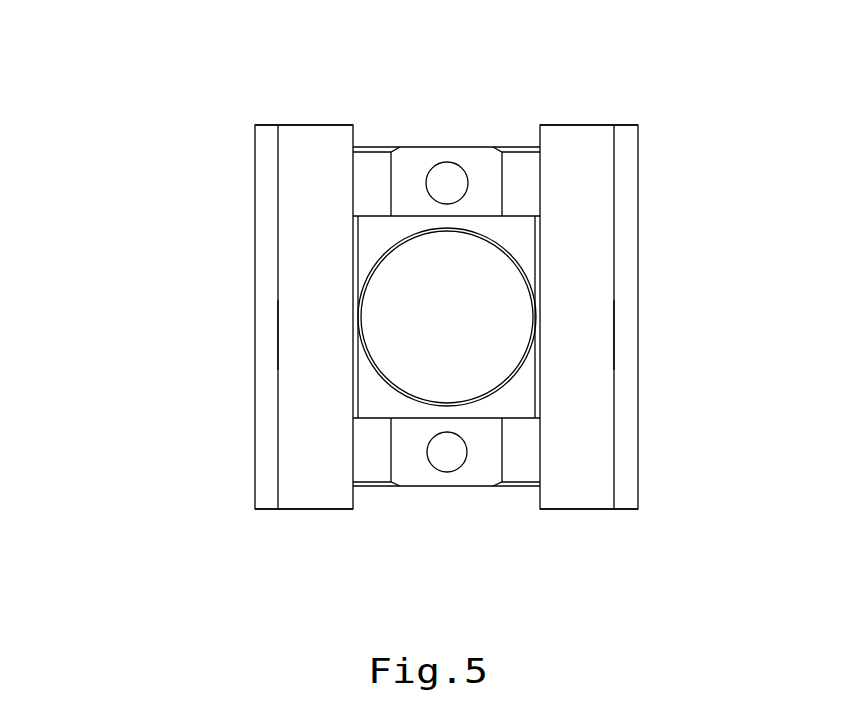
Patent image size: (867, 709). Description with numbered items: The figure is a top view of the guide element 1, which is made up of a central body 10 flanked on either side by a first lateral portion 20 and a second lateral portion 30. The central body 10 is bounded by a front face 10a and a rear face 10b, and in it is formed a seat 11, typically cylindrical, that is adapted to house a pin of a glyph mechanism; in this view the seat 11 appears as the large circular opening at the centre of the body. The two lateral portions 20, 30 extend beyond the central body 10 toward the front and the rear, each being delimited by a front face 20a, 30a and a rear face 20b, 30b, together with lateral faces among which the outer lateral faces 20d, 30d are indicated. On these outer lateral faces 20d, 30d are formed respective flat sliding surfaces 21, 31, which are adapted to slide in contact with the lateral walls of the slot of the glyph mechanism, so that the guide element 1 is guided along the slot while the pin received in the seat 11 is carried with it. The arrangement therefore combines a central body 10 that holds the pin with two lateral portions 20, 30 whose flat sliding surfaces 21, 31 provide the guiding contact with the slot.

The guide element 1 is at (166, 457).
The central body 10 is at (446, 335).
The front face 10a is at (406, 487).
The rear face 10b is at (477, 143).
The seat 11 is at (447, 317).
The first lateral portion 20 is at (265, 304).
The front face 20a is at (306, 512).
The rear face 20b is at (314, 121).
The outer lateral face 20d is at (276, 336).
The flat sliding surface 21 is at (278, 262).
The second lateral portion 30 is at (632, 303).
The front face 30a is at (583, 512).
The rear face 30b is at (583, 121).
The outer lateral face 30d is at (619, 337).
The flat sliding surface 31 is at (615, 262).